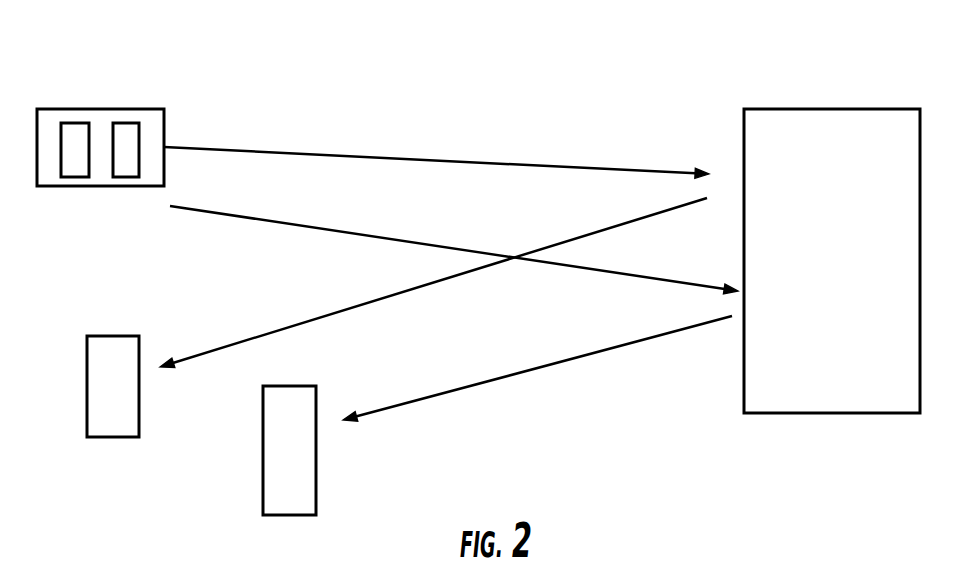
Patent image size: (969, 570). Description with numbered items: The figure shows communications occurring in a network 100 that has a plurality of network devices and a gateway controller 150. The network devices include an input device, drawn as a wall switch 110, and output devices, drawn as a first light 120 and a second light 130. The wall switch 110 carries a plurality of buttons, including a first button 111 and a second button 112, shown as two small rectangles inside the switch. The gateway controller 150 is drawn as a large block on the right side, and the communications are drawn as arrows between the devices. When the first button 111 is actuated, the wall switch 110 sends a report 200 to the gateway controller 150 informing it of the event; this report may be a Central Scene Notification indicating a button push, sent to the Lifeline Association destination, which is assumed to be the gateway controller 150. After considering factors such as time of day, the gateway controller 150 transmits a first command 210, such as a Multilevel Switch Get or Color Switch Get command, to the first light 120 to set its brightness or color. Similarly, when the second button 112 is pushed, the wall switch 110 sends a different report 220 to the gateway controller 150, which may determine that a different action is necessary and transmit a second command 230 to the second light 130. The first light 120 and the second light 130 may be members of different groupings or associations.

The network 100 is at (678, 84).
The wall switch 110 is at (112, 109).
The first button 111 is at (75, 178).
The second button 112 is at (133, 178).
The first light 120 is at (110, 437).
The second light 130 is at (287, 515).
The gateway controller 150 is at (857, 413).
The report 200 is at (349, 154).
The first command 210 is at (342, 311).
The different report 220 is at (293, 225).
The second command 230 is at (522, 375).